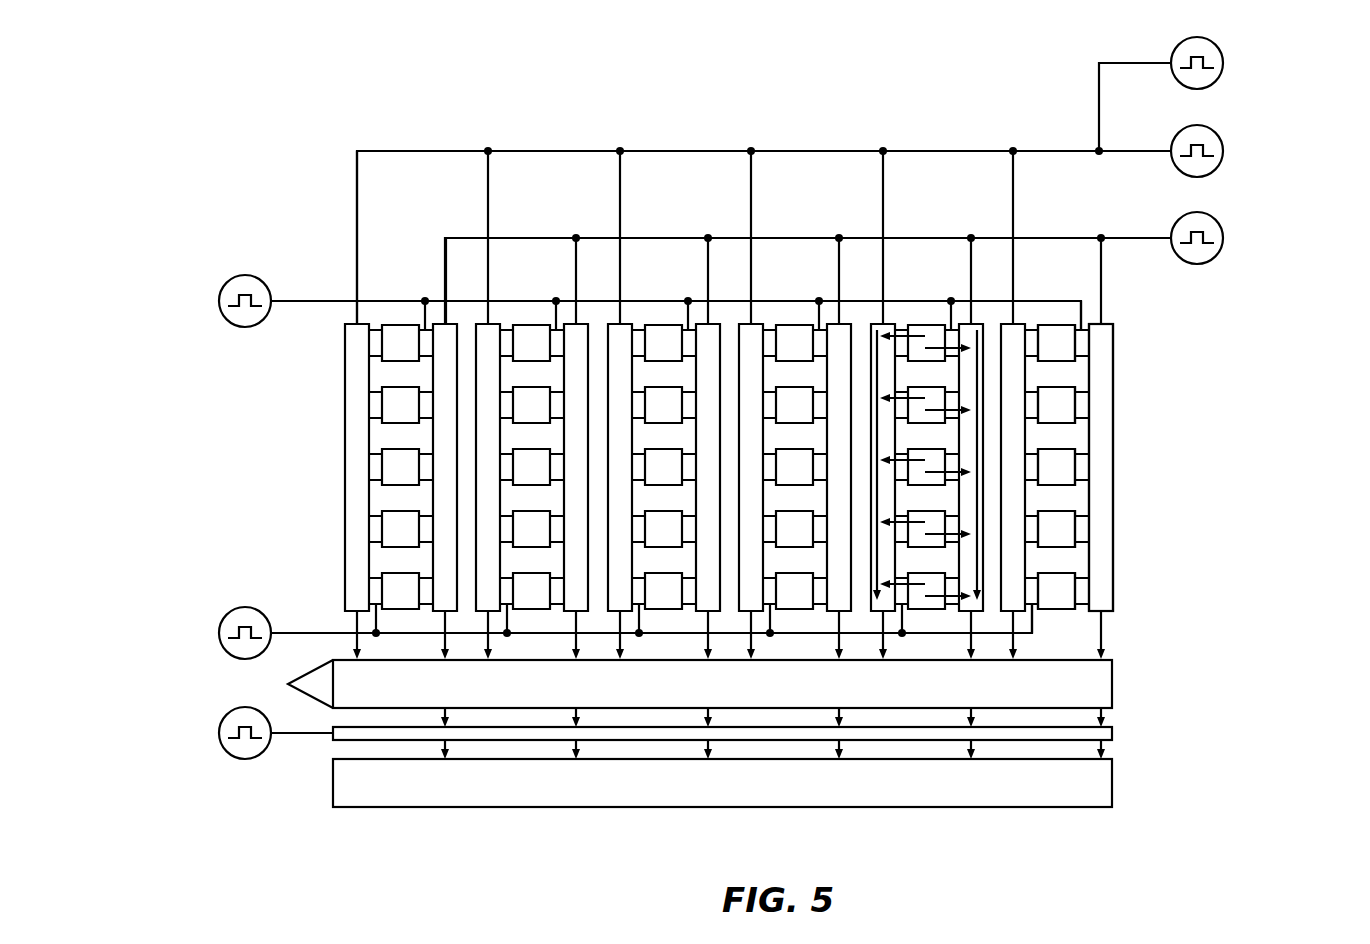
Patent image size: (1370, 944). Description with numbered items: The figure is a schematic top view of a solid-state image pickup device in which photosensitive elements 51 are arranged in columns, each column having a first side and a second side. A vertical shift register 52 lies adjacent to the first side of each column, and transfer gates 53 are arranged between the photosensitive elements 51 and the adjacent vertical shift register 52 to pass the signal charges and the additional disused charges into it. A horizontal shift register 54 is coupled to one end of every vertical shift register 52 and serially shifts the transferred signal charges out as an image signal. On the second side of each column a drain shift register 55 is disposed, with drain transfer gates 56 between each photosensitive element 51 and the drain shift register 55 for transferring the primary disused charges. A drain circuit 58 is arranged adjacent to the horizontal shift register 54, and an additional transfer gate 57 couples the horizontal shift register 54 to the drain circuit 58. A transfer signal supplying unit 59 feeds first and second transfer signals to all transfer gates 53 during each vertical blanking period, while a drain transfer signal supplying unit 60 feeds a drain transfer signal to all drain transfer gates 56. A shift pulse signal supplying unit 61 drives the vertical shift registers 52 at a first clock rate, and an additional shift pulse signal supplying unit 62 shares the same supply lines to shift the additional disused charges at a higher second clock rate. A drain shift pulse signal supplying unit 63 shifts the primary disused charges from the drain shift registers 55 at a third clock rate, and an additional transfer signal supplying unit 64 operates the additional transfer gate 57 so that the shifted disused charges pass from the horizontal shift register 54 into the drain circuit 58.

The photosensitive elements 51 is at (1074, 325).
The vertical shift registers 52 is at (1026, 559).
The transfer gates 53 is at (430, 392).
The horizontal shift register 54 is at (1112, 677).
The drain shift registers 55 is at (1114, 463).
The drain transfer gates 56 is at (1027, 356).
The additional transfer gate 57 is at (1112, 740).
The drain circuit 58 is at (1112, 783).
The transfer signal supplying unit 59 is at (219, 633).
The drain transfer signal supplying unit 60 is at (219, 301).
The shift pulse signal supplying unit 61 is at (1224, 153).
The additional shift pulse signal supplying unit 62 is at (1224, 65).
The drain shift pulse signal supplying unit 63 is at (1224, 240).
The additional transfer signal supplying unit 64 is at (219, 733).